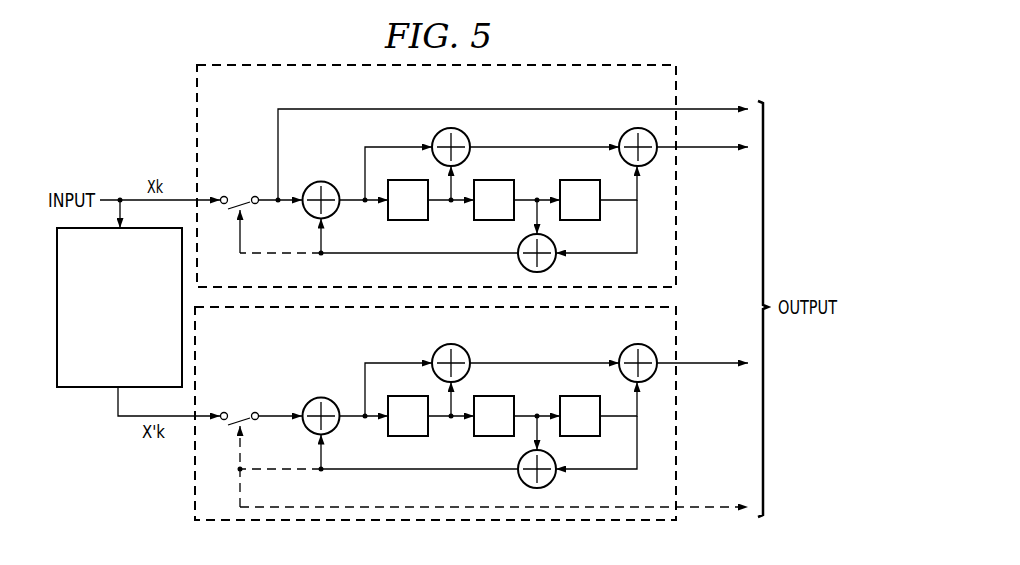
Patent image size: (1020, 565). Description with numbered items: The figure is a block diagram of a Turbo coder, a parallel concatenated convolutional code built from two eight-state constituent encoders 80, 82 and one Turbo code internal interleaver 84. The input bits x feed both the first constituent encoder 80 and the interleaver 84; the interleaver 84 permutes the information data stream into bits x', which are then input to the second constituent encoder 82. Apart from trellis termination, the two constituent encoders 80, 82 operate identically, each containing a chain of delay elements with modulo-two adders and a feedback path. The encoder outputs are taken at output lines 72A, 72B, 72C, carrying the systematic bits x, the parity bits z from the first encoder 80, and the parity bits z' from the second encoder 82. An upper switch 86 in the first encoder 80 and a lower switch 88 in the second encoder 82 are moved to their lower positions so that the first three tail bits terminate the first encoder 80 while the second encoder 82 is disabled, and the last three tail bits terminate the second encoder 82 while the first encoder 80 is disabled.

The first 8-state constituent encoder 80 is at (197, 158).
The second 8-state constituent encoder 82 is at (193, 468).
The Turbo code internal interleaver 84 is at (89, 388).
The upper switch 86 is at (238, 193).
The lower switch 88 is at (238, 408).
The systematic output Xk 72A is at (725, 103).
The parity output Zk 72B is at (703, 153).
The parity output Z'k 72C is at (703, 370).